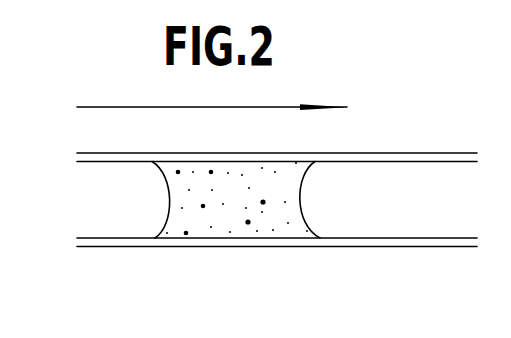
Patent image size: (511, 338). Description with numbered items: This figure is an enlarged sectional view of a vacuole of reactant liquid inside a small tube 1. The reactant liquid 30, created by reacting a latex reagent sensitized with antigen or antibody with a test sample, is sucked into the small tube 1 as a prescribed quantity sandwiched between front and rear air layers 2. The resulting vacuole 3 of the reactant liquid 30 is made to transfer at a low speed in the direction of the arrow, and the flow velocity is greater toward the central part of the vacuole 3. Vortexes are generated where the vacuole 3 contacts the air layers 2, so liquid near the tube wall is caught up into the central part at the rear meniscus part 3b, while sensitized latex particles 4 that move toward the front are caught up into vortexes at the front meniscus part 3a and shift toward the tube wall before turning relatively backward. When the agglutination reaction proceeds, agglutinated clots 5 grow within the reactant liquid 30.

The small tube 1 is at (100, 153).
The air layers 2 is at (95, 207).
The vacuole 3 is at (208, 256).
The front meniscus part 3a is at (300, 193).
The rear meniscus part 3b is at (168, 203).
The sensitized latex particles 4 is at (241, 173).
The agglutinated clots 5 is at (263, 202).
The reactant liquid 30 is at (256, 224).